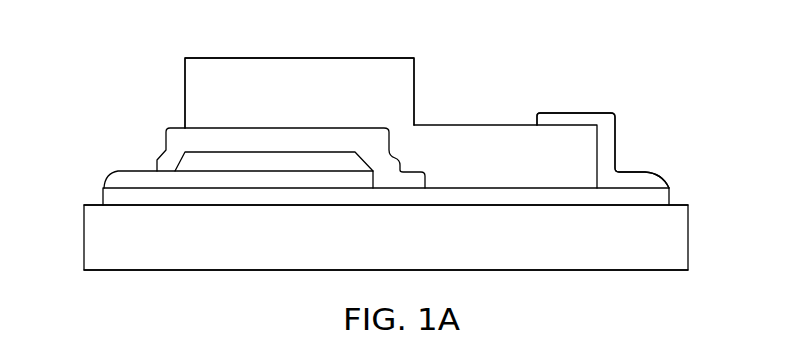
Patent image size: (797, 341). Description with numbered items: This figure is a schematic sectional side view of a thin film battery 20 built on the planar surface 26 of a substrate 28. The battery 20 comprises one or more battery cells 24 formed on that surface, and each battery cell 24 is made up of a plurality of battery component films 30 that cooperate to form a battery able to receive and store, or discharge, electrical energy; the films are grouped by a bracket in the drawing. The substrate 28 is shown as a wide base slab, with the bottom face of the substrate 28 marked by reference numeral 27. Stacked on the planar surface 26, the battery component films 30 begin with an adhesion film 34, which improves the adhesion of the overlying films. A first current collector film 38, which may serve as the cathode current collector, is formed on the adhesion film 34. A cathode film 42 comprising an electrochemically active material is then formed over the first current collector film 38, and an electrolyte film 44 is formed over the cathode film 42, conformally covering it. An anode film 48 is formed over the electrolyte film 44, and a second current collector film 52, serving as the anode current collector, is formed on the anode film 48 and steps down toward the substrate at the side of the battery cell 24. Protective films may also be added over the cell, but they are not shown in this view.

The thin film battery 20 is at (162, 78).
The battery cell 24 is at (538, 82).
The planar surface 26 is at (155, 205).
The substrate bottom surface 27 is at (128, 271).
The substrate 28 is at (336, 254).
The battery component films 30 is at (710, 59).
The adhesion film 34 is at (102, 195).
The first current collector film 38 is at (108, 173).
The cathode film 42 is at (208, 160).
The electrolyte film 44 is at (352, 134).
The anode film 48 is at (301, 97).
The second current collector film 52 is at (615, 116).